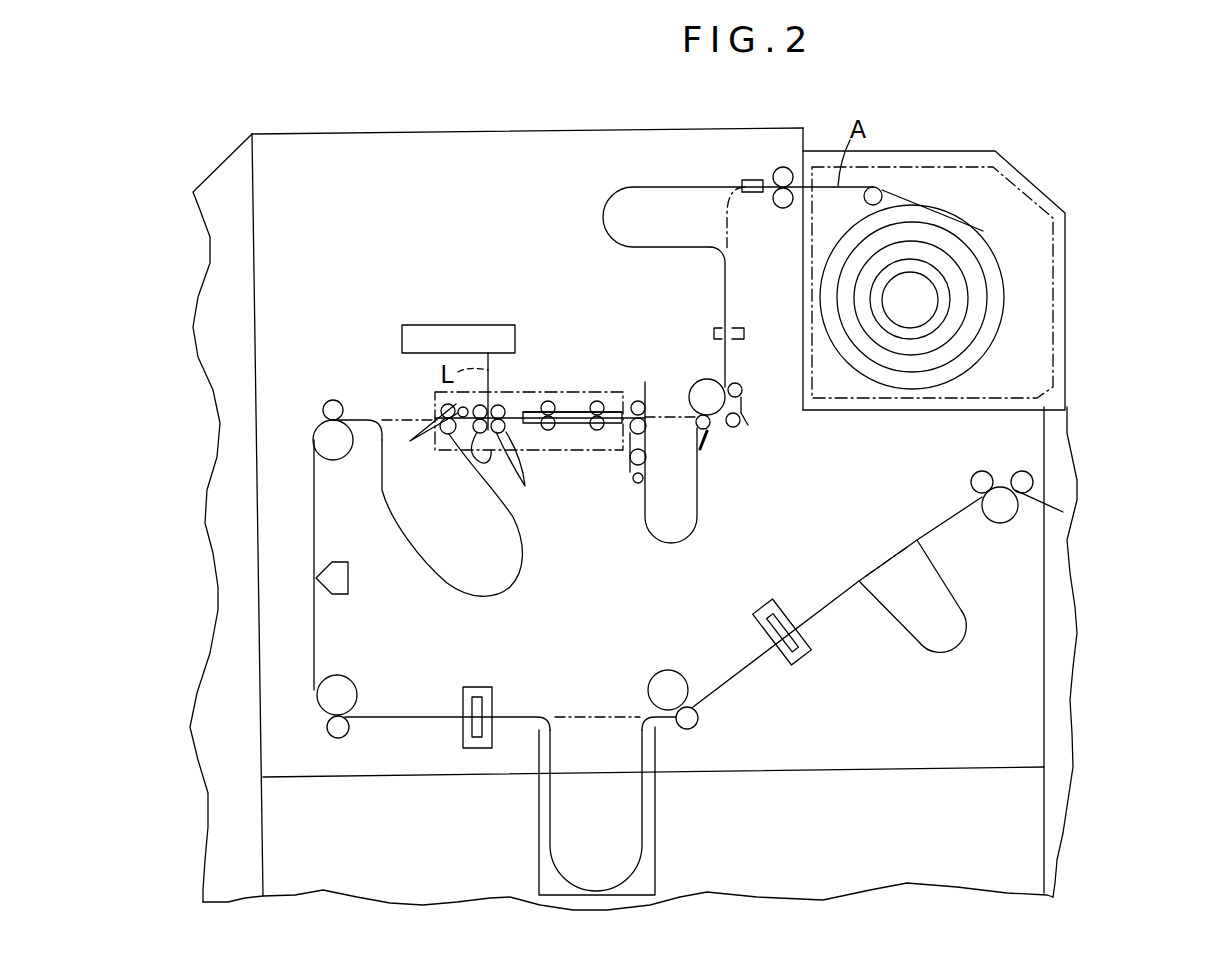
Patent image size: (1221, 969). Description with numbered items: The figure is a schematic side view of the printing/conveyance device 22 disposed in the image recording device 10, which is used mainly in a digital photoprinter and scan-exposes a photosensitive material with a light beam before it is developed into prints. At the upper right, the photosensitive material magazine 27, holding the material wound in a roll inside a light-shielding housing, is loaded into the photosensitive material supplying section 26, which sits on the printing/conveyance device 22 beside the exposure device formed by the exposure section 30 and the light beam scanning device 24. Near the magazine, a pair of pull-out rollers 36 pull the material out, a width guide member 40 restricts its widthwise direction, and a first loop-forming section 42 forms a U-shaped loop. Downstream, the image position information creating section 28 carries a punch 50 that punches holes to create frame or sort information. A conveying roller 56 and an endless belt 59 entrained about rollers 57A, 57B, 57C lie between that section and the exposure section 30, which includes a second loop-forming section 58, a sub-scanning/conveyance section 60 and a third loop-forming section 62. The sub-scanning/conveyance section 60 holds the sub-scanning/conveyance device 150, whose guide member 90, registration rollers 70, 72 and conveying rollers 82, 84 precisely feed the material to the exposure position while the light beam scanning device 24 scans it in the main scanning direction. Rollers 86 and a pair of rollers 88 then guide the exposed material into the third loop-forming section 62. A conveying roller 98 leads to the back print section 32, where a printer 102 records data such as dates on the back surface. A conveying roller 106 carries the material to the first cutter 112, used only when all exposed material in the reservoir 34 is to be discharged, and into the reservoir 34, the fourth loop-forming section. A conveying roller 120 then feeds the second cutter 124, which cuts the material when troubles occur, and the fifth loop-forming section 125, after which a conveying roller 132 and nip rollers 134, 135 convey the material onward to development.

The image recording device 10 is at (1145, 122).
The printing/conveyance device 22 is at (572, 122).
The light beam scanning device 24 is at (462, 333).
The photosensitive material supplying section 26 is at (1018, 132).
The photosensitive material magazine 27 is at (1042, 205).
The image position information creating section 28 is at (700, 310).
The exposure section 30 is at (546, 328).
The back print section 32 is at (292, 582).
The reservoir 34 is at (657, 855).
The pair of pull-out rollers 36 is at (788, 190).
The width guide member 40 is at (742, 181).
The first loop-forming section 42 is at (652, 184).
The punch 50 is at (718, 335).
The conveying roller 56 is at (703, 385).
The roller 57A is at (742, 390).
The roller 57B is at (740, 420).
The roller 57C is at (713, 431).
The second loop-forming section 58 is at (705, 495).
The endless belt 59 is at (748, 425).
The sub-scanning/conveyance section 60 is at (566, 440).
The third loop-forming section 62 is at (535, 578).
The registration roller 70 is at (597, 403).
The registration roller 72 is at (552, 402).
The conveying roller 82 is at (514, 458).
The conveying roller 84 is at (486, 442).
The rollers 86 is at (434, 450).
The pair of rollers 88 is at (429, 437).
The guide member 90 is at (560, 400).
The conveying roller 98 is at (344, 457).
The printer 102 is at (348, 578).
The conveying roller 106 is at (357, 686).
The first cutter 112 is at (492, 705).
The conveying roller 120 is at (668, 690).
The second cutter 124 is at (762, 612).
The fifth loop-forming section 125 is at (951, 652).
The conveying roller 132 is at (1000, 522).
The nip roller 134 is at (978, 478).
The nip roller 135 is at (1020, 472).
The sub-scanning/conveyance device 150 is at (433, 400).